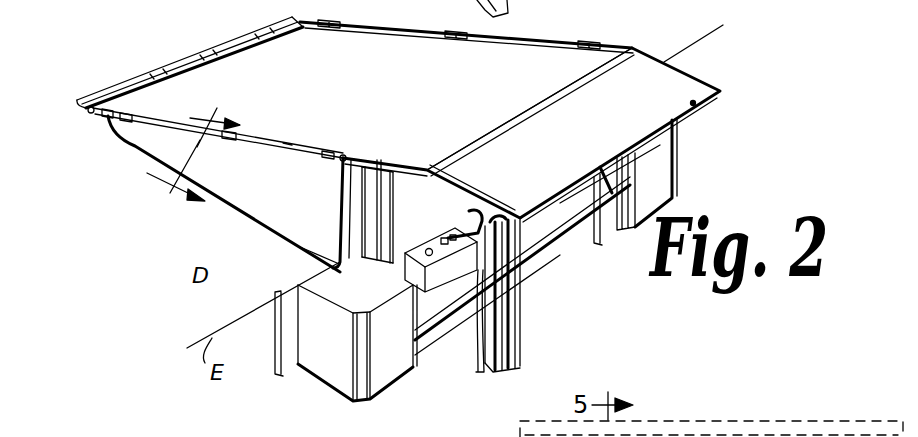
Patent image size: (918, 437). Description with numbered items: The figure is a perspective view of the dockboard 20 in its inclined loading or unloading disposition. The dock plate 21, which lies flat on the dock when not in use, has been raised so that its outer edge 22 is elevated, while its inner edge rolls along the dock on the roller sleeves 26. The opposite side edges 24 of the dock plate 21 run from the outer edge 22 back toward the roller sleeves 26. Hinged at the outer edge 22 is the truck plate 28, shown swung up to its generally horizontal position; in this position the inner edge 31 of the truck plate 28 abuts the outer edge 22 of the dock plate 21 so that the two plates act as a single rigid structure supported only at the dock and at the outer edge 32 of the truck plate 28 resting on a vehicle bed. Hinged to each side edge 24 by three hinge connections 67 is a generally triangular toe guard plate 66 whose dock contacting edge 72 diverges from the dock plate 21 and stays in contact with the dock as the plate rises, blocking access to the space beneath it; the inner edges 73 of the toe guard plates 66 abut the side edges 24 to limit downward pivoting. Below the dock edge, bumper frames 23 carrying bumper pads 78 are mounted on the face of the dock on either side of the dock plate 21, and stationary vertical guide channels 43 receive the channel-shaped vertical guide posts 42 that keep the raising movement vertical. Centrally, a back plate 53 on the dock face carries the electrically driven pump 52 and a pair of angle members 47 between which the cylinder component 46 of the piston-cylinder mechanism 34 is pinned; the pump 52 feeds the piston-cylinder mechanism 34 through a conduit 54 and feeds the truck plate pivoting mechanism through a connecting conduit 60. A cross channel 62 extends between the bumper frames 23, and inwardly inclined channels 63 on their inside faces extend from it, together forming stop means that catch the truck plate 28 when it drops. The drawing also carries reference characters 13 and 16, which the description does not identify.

The section line arrows 13 is at (193, 149).
The control knobs 16 is at (428, 250).
The dockboard 20 is at (147, 193).
The dock plate 21 is at (415, 108).
The outer edge 22 is at (462, 157).
The bumper frames 23 is at (325, 373).
The side edges 24 is at (397, 33).
The roller sleeves 26 is at (170, 66).
The truck plate 28 is at (677, 83).
The inner edge 31 is at (490, 131).
The outer edge 32 is at (695, 106).
The piston-cylinder mechanism 34 is at (515, 318).
The vertical guide posts 42 is at (385, 195).
The vertical guide channels 43 is at (622, 242).
The cylinder component 46 is at (507, 365).
The angle members 47 is at (520, 335).
The pump 52 is at (443, 282).
The back plate 53 is at (282, 350).
The conduit 54 is at (476, 372).
The connecting conduit 60 is at (480, 226).
The cross channel 62 is at (547, 240).
The inwardly inclined channels 63 is at (637, 155).
The toe guard plate 66 is at (233, 203).
The hinge connections 67 is at (235, 37).
The dock contacting edge 72 is at (263, 230).
The inner edges 73 is at (287, 147).
The bumper pads 78 is at (400, 348).